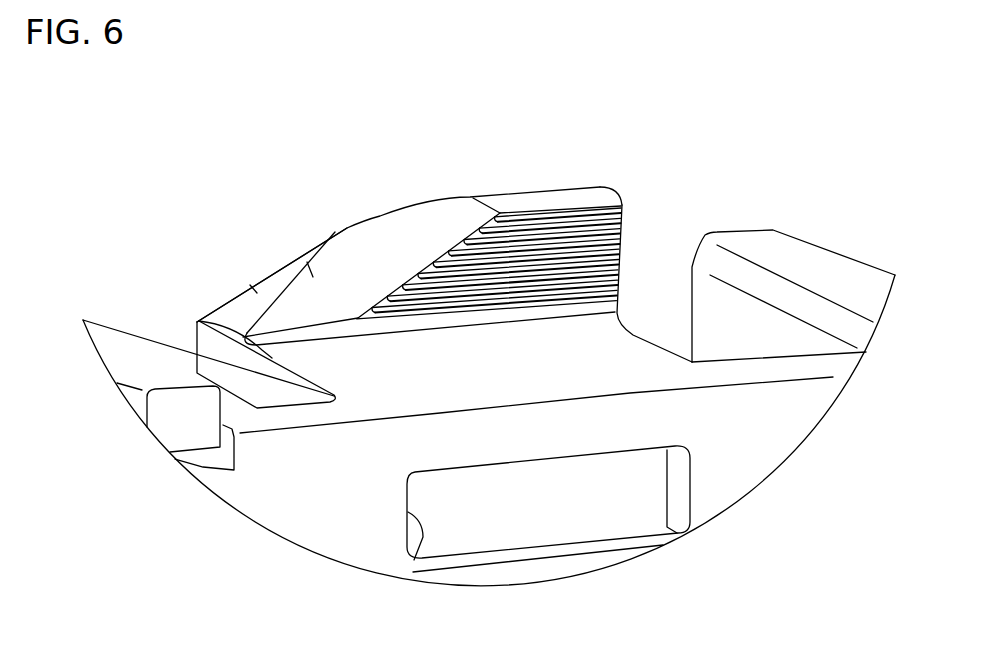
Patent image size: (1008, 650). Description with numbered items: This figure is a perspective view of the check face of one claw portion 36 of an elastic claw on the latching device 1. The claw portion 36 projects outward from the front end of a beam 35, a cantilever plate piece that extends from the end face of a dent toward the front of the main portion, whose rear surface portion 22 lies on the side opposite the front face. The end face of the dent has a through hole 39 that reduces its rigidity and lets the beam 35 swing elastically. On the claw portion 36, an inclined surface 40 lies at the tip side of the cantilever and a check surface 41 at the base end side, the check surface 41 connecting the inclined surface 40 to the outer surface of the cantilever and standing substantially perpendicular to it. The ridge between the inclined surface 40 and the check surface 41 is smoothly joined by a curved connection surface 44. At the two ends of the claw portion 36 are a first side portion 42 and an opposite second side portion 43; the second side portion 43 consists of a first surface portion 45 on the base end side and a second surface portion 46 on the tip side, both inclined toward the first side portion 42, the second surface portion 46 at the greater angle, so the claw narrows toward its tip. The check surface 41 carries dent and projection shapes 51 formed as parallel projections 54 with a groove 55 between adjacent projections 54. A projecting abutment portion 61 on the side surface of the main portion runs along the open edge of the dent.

The device body 1 is at (801, 172).
The rear surface portion 22 is at (743, 472).
The beam 35 is at (199, 321).
The claw portion 36 is at (337, 226).
The through hole 39 is at (423, 523).
The inclined surface 40 is at (538, 189).
The check surface 41 is at (626, 253).
The first side portion 42 is at (624, 230).
The second side portion 43 is at (230, 217).
The connection surface 44 is at (607, 202).
The first surface portion 45 is at (250, 285).
The second surface portion 46 is at (307, 262).
The dent and projection shapes 51 is at (490, 150).
The projections 54 is at (473, 243).
The groove 55 is at (482, 233).
The projecting abutment portion 61 is at (130, 368).